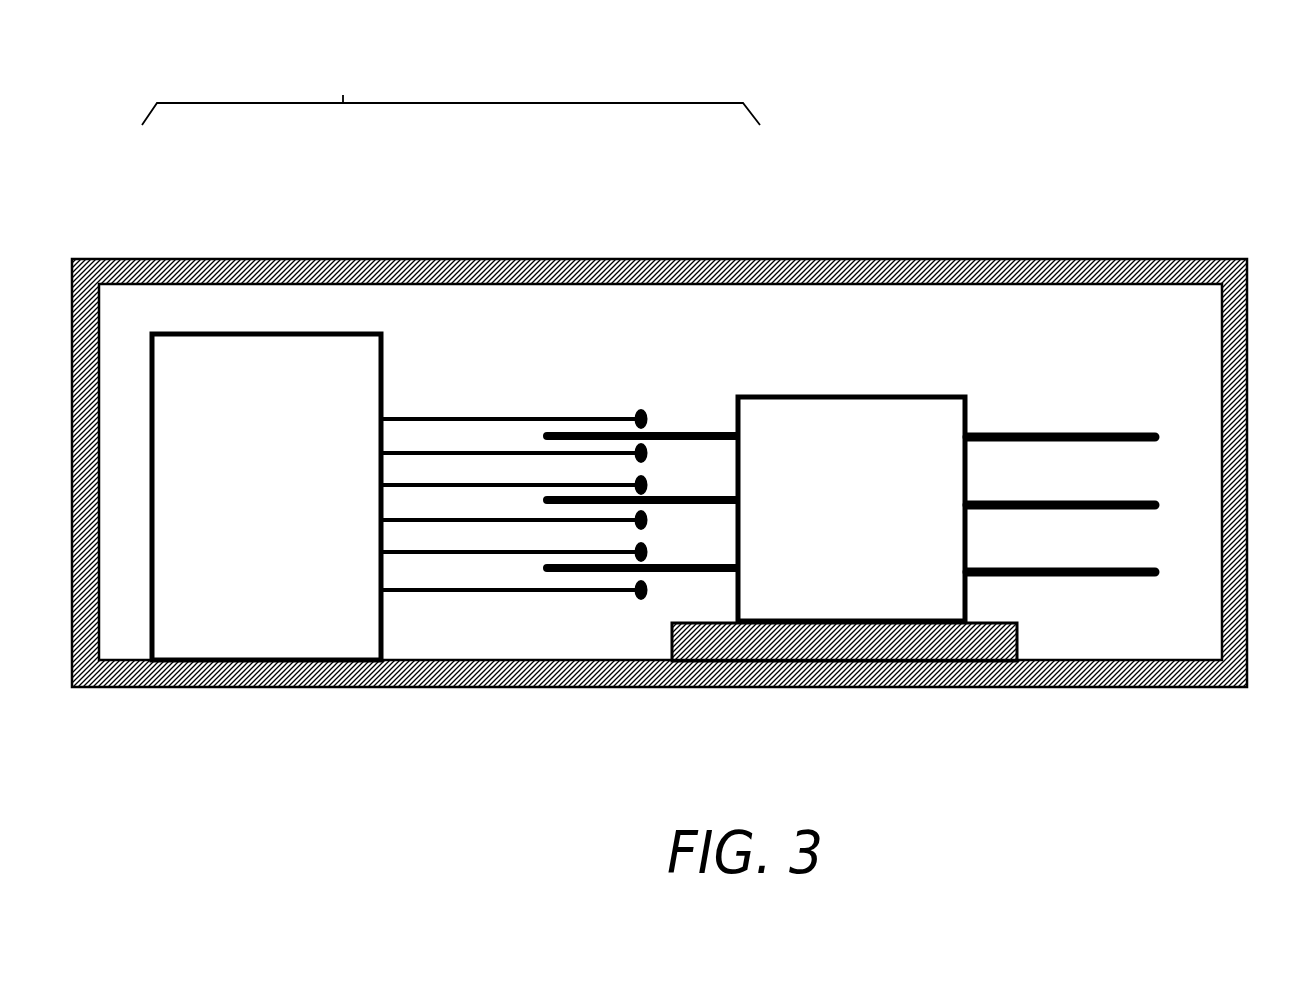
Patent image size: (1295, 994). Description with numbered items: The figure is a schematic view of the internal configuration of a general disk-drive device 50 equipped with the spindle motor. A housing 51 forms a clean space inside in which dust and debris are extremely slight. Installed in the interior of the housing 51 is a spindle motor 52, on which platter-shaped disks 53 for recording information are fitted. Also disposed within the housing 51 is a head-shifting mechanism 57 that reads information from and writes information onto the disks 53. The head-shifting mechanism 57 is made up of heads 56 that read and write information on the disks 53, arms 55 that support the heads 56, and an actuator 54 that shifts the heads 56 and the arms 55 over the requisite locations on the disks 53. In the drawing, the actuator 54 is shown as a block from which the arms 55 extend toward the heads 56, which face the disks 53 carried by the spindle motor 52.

The disk-drive device 50 is at (562, 23).
The housing 51 is at (897, 285).
The spindle motor 52 is at (796, 457).
The disks 53 is at (1055, 495).
The actuator 54 is at (240, 378).
The arms 55 is at (483, 453).
The heads 56 is at (643, 450).
The head-shifting mechanism 57 is at (451, 95).